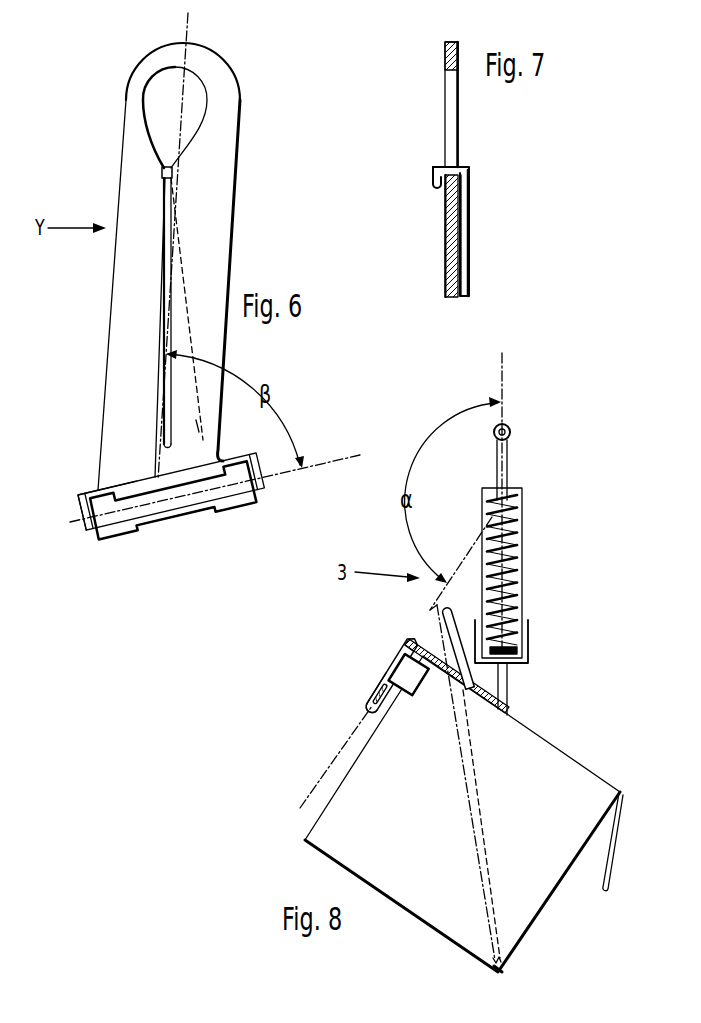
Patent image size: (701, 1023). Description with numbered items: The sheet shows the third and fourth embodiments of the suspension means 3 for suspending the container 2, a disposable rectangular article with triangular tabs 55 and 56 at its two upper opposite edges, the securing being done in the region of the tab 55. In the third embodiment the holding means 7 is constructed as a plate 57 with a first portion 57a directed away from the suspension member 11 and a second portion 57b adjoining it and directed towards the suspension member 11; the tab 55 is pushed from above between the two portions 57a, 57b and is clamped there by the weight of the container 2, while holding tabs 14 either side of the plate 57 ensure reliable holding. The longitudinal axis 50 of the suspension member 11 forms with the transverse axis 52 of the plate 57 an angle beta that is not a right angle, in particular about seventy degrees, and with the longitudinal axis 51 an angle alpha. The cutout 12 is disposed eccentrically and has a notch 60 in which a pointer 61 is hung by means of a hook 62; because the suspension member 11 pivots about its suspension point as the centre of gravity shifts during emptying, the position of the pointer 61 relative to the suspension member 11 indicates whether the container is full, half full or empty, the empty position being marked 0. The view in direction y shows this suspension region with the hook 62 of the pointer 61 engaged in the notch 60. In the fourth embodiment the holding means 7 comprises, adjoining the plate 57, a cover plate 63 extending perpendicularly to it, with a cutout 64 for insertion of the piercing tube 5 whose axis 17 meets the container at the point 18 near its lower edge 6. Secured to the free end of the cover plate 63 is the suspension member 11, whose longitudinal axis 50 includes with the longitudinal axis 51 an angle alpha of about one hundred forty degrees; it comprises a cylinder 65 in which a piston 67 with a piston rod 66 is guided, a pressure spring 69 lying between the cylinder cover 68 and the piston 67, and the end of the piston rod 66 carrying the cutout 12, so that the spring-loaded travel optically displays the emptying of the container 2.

In FIG. 8, the container 2 is at (557, 762).
In FIG. 8, the suspension means 3 is at (433, 607).
In FIG. 8, the pin 5 is at (450, 675).
In FIG. 8, the lower edge point of plate 6 is at (502, 972).
In FIG. 8, the holding means 7 is at (368, 657).
In FIG. 6, the suspension member 11 is at (225, 227).
In FIG. 7, the suspension member 11 is at (446, 242).
In FIG. 8, the suspension member 11 is at (540, 573).
In FIG. 6, the cutout 12 is at (147, 100).
In FIG. 7, the cutout 12 is at (445, 102).
In FIG. 8, the cutout 12 is at (494, 432).
In FIG. 6, the holding tabs 14 is at (80, 525).
In FIG. 8, the holding tabs 14 is at (410, 702).
In FIG. 8, the pin axis 17 is at (473, 773).
In FIG. 8, the intersection point 18 is at (510, 953).
In FIG. 6, the longitudinal axis of the suspension member 50 is at (183, 27).
In FIG. 8, the longitudinal axis of the suspension member 50 is at (497, 365).
In FIG. 8, the longitudinal axis of the plate 51 is at (305, 803).
In FIG. 6, the transverse axis of the plate 52 is at (346, 455).
In FIG. 8, the tab 55 is at (362, 720).
In FIG. 8, the tab 56 is at (608, 888).
In FIG. 6, the plate 57 is at (73, 505).
In FIG. 8, the plate 57 is at (397, 647).
In FIG. 6, the first portion 57a is at (95, 492).
In FIG. 6, the second portion 57b is at (117, 532).
In FIG. 6, the notch 60 is at (175, 172).
In FIG. 6, the pointer 61 is at (165, 274).
In FIG. 7, the pointer 61 is at (464, 262).
In FIG. 7, the hook 62 is at (460, 168).
In FIG. 8, the cover plate 63 is at (420, 647).
In FIG. 8, the cutout 64 is at (472, 678).
In FIG. 8, the cylinder 65 is at (527, 618).
In FIG. 8, the piston rod 66 is at (497, 463).
In FIG. 8, the piston 67 is at (520, 652).
In FIG. 8, the cylinder cover 68 is at (520, 492).
In FIG. 8, the pressure spring 69 is at (520, 530).
In FIG. 6, the angle reference point 0 is at (203, 420).